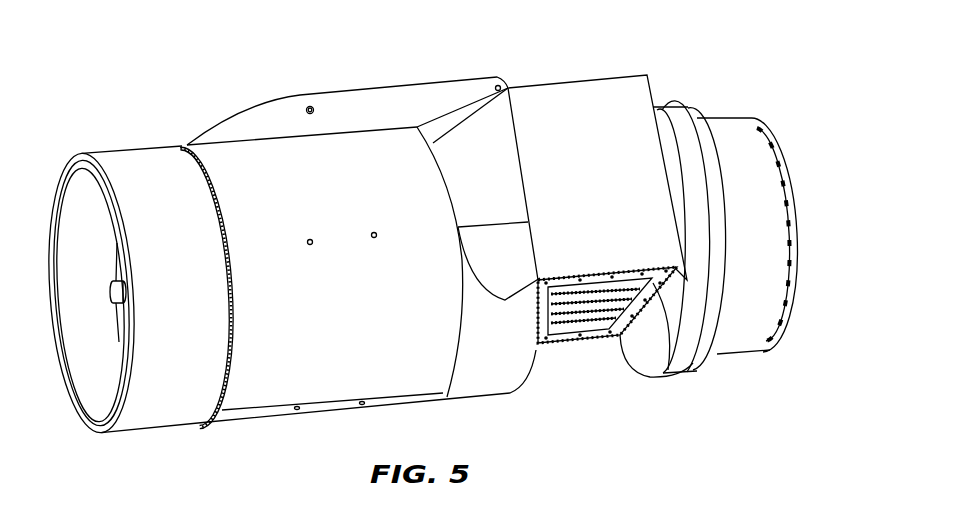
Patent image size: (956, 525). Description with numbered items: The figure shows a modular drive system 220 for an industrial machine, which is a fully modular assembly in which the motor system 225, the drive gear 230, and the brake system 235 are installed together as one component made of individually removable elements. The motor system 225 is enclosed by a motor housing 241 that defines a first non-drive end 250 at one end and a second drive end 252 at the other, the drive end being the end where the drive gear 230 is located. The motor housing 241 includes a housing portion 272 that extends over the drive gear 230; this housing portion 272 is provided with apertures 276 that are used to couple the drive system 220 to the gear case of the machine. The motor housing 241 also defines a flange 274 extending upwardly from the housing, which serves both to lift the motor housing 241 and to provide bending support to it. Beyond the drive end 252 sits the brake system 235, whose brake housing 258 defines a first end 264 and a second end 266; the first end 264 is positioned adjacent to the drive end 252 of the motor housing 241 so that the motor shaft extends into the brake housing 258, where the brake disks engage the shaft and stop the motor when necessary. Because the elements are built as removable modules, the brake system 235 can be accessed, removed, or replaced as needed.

The modular drive system 220 is at (219, 51).
The motor system 225 is at (157, 135).
The drive gear 230 is at (570, 313).
The brake system 235 is at (758, 91).
The motor housing 241 is at (97, 432).
The first non-drive end 250 is at (110, 162).
The second drive end 252 is at (652, 357).
The brake housing 258 is at (758, 333).
The first end of brake housing 264 is at (680, 107).
The second end of brake housing 266 is at (767, 260).
The housing portion 272 is at (597, 105).
The flange 274 is at (370, 103).
The apertures 276 is at (652, 285).